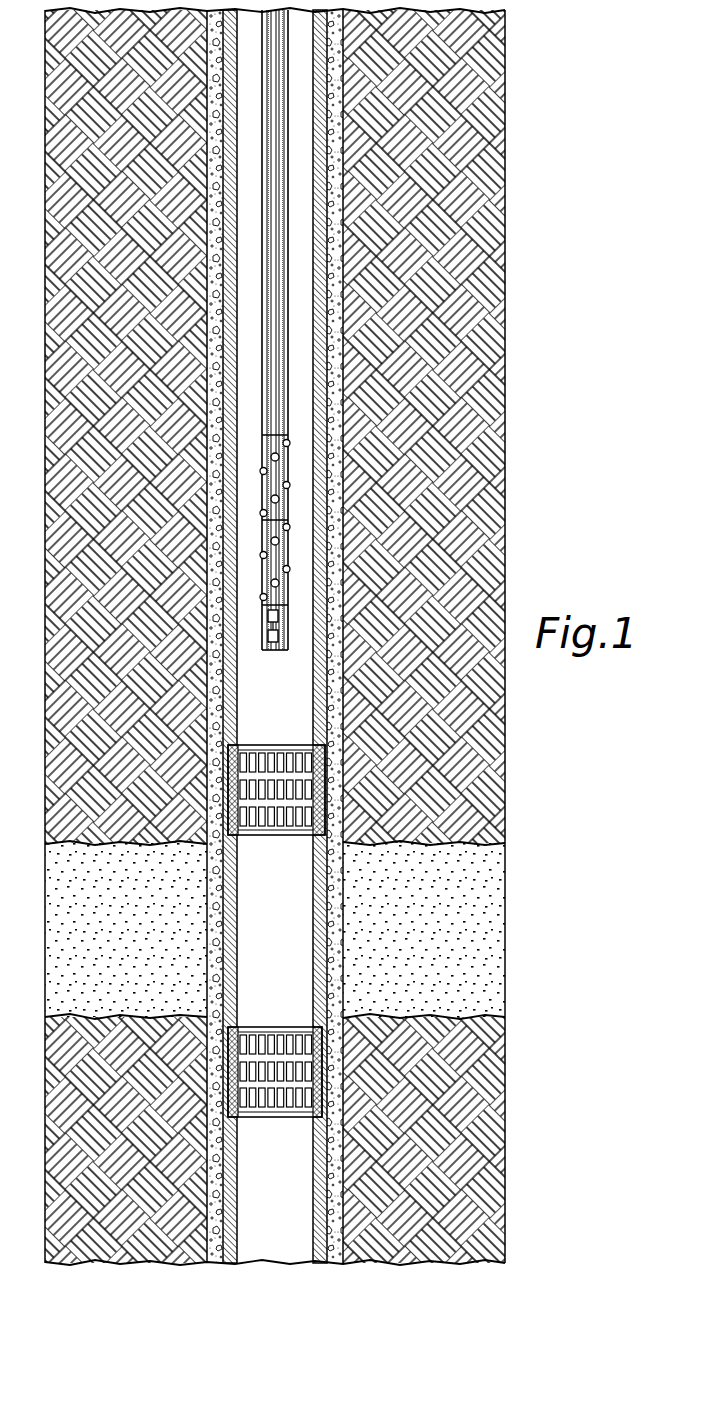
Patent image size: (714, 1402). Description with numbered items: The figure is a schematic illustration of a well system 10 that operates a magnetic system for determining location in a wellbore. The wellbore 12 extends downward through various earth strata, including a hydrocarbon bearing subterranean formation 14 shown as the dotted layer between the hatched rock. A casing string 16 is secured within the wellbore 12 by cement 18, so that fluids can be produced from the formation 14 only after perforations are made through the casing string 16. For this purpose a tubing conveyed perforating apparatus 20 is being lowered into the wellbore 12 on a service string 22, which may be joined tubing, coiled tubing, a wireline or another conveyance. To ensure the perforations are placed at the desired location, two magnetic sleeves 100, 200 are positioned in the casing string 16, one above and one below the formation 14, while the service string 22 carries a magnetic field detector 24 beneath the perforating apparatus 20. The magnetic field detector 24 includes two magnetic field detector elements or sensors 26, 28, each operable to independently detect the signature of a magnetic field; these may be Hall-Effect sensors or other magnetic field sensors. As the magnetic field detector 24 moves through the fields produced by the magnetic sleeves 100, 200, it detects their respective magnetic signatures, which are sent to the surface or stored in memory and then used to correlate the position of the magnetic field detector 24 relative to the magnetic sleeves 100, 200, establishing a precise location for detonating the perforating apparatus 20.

The well system 10 is at (537, 83).
The wellbore 12 is at (343, 350).
The hydrocarbon bearing subterranean formation 14 is at (436, 941).
The casing string 16 is at (327, 295).
The cement 18 is at (338, 244).
The tubing conveyed perforating apparatus 20 is at (285, 505).
The service string 22 is at (278, 160).
The magnetic field detector 24 is at (281, 627).
The magnetic field detector element 26 is at (268, 616).
The magnetic field detector element 28 is at (268, 637).
The magnetic sleeve 100 is at (322, 748).
The magnetic sleeve 200 is at (322, 1032).